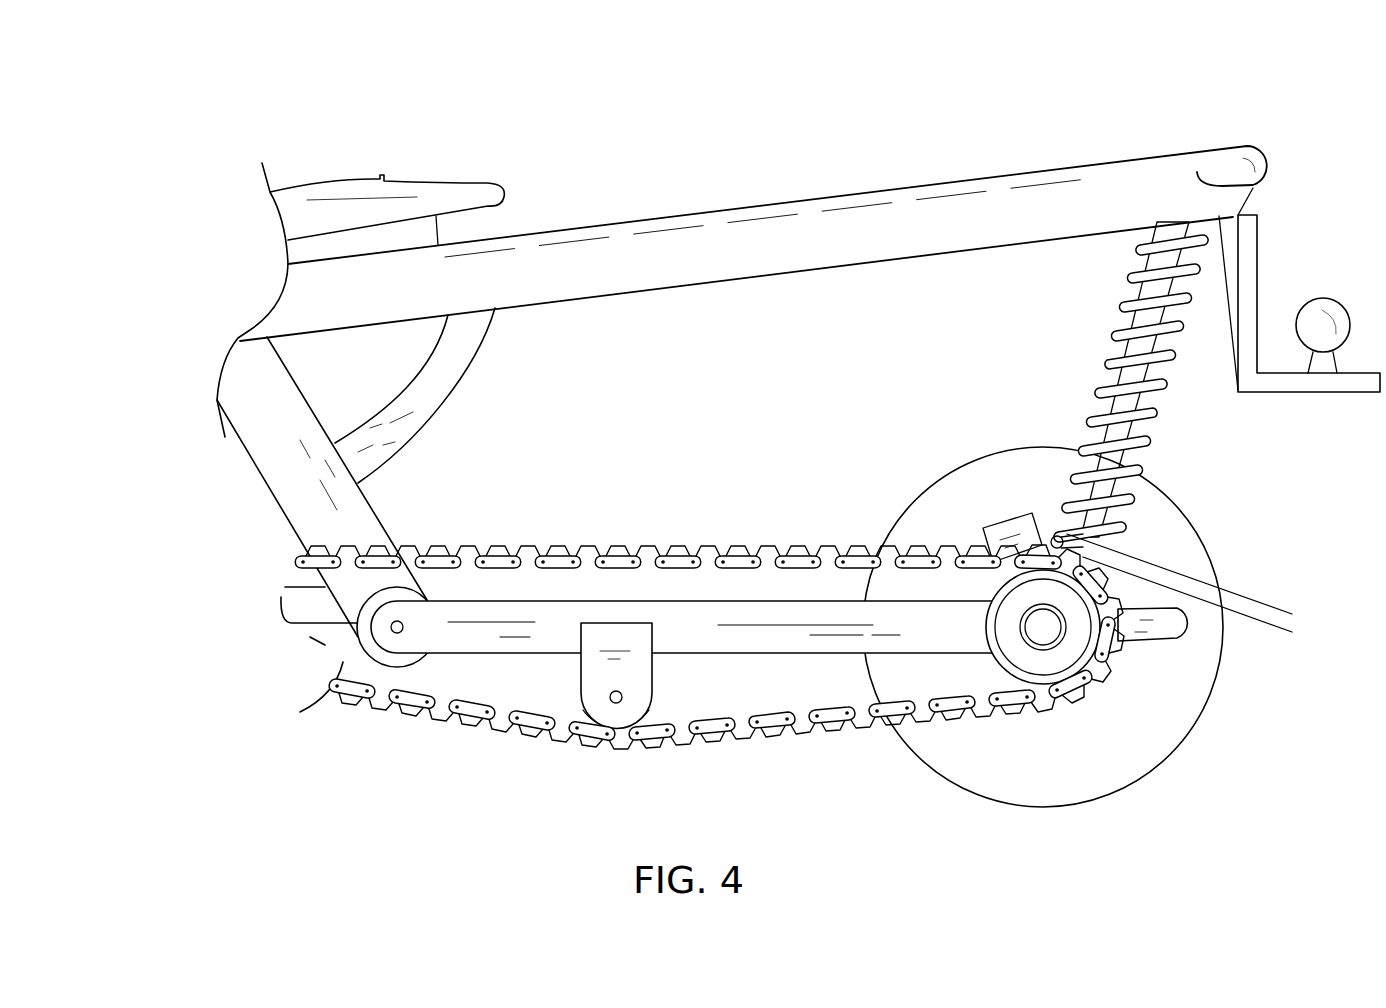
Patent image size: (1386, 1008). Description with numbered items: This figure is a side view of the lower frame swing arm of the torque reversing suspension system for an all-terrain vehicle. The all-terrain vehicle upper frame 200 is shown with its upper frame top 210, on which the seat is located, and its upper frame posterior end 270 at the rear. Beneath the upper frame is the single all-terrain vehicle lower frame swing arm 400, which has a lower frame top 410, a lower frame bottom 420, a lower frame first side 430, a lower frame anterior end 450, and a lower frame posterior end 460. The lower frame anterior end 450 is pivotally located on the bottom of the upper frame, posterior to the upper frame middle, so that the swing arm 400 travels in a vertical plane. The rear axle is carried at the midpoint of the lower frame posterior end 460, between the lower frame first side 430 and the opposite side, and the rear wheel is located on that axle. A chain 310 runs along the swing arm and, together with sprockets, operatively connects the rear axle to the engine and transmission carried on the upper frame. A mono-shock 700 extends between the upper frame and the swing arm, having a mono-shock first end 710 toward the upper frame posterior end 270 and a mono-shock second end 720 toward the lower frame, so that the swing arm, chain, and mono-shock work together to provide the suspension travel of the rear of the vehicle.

The all-terrain vehicle upper frame 200 is at (393, 277).
The upper frame top 210 is at (641, 222).
The upper frame posterior end 270 is at (1240, 158).
The chain 310 is at (742, 547).
The all-terrain vehicle lower frame swing arm 400 is at (547, 622).
The lower frame top 410 is at (500, 598).
The lower frame bottom 420 is at (715, 652).
The lower frame first side 430 is at (920, 623).
The lower frame anterior end 450 is at (402, 640).
The lower frame posterior end 460 is at (965, 625).
The mono-shock 700 is at (1141, 389).
The mono-shock first end 710 is at (1173, 247).
The mono-shock second end 720 is at (1163, 582).